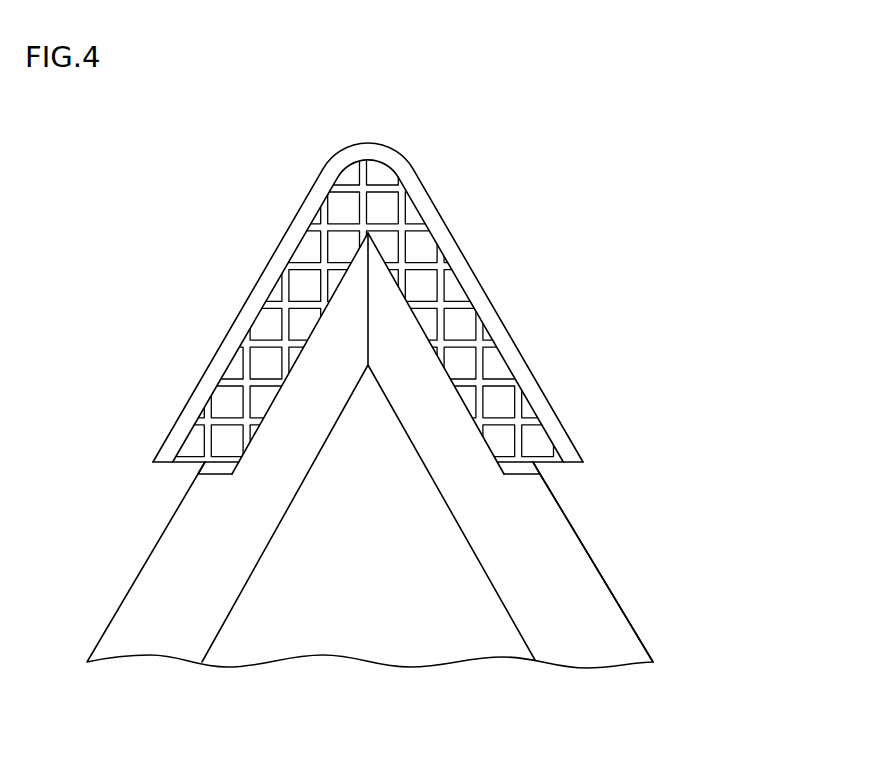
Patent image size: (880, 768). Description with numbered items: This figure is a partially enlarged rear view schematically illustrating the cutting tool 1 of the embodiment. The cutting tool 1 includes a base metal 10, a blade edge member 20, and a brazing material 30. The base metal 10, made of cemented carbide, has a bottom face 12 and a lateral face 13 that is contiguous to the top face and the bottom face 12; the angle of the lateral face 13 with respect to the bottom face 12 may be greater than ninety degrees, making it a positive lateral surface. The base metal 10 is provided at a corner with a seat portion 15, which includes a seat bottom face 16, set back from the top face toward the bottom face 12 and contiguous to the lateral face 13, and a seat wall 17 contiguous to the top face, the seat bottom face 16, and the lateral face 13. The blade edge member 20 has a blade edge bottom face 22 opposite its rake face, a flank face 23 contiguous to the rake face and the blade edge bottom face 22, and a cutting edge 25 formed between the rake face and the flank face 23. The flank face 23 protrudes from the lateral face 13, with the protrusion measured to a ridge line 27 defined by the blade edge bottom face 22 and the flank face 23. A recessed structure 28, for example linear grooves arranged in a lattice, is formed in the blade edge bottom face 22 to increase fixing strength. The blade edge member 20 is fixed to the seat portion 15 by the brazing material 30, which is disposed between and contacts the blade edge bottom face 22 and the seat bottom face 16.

The cutting tool 1 is at (593, 142).
The base metal 10 is at (394, 450).
The bottom face 12 is at (428, 557).
The lateral face 13 is at (558, 598).
The seat portion 15 is at (423, 353).
The seat bottom face 16 is at (465, 395).
The seat wall 17 is at (520, 470).
The blade edge member 20 is at (368, 262).
The blade edge bottom face 22 is at (390, 149).
The flank face 23 is at (420, 195).
The cutting edge 25 is at (293, 218).
The ridge line 27 is at (277, 287).
The recessed structure 28 is at (447, 323).
The brazing material 30 is at (545, 468).